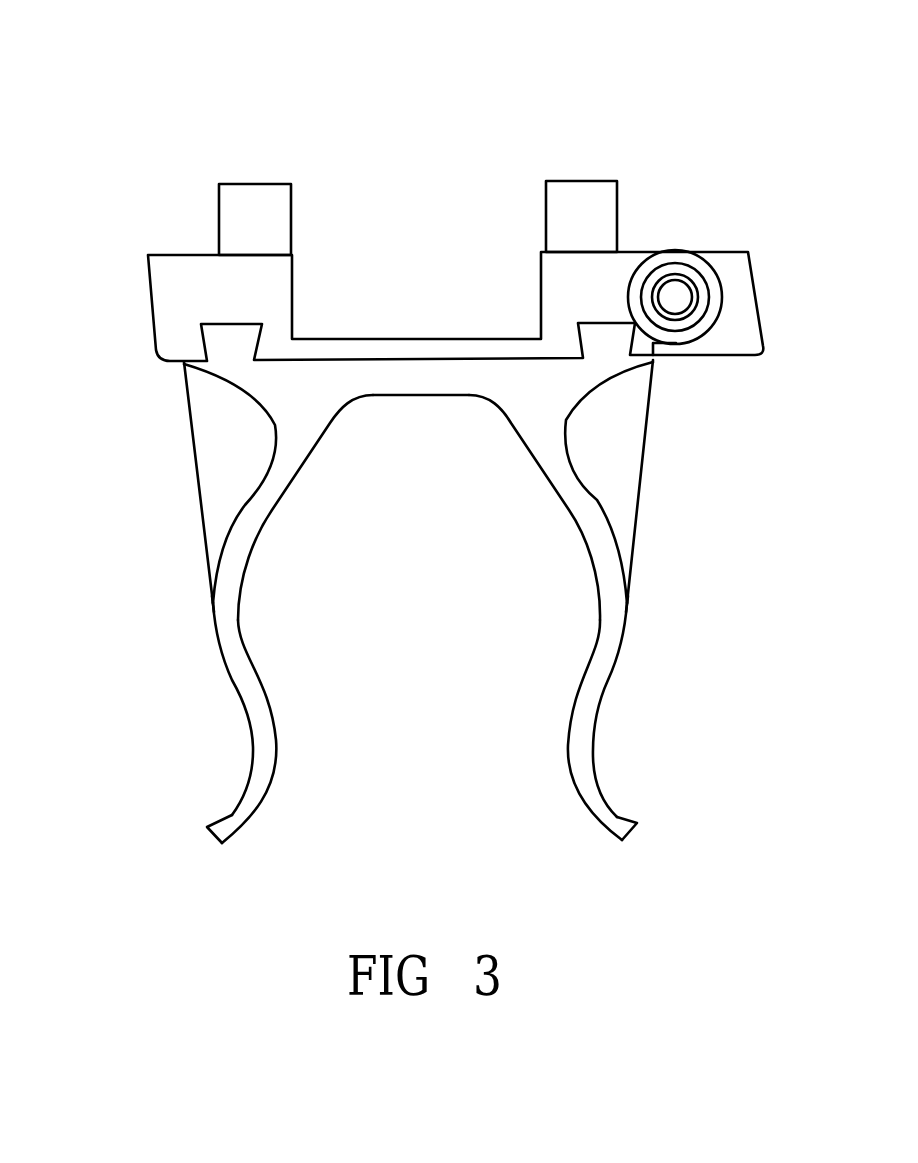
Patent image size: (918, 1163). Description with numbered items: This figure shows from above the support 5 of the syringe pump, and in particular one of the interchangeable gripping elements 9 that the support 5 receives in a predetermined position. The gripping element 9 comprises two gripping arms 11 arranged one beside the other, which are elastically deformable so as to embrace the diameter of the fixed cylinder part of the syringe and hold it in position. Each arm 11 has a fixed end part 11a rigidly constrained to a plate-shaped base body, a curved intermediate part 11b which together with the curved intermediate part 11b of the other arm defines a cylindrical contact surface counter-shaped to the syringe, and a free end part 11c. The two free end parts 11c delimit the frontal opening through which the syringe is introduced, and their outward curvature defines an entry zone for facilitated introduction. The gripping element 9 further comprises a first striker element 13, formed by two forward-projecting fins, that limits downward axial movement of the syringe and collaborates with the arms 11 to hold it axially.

The support 5 is at (409, 165).
The gripping element 9 is at (692, 547).
The gripping arm 11 is at (233, 716).
The fixed end part 11a is at (298, 391).
The curved intermediate part 11b is at (230, 602).
The free end part 11c is at (233, 817).
The first striker element 13 is at (183, 468).